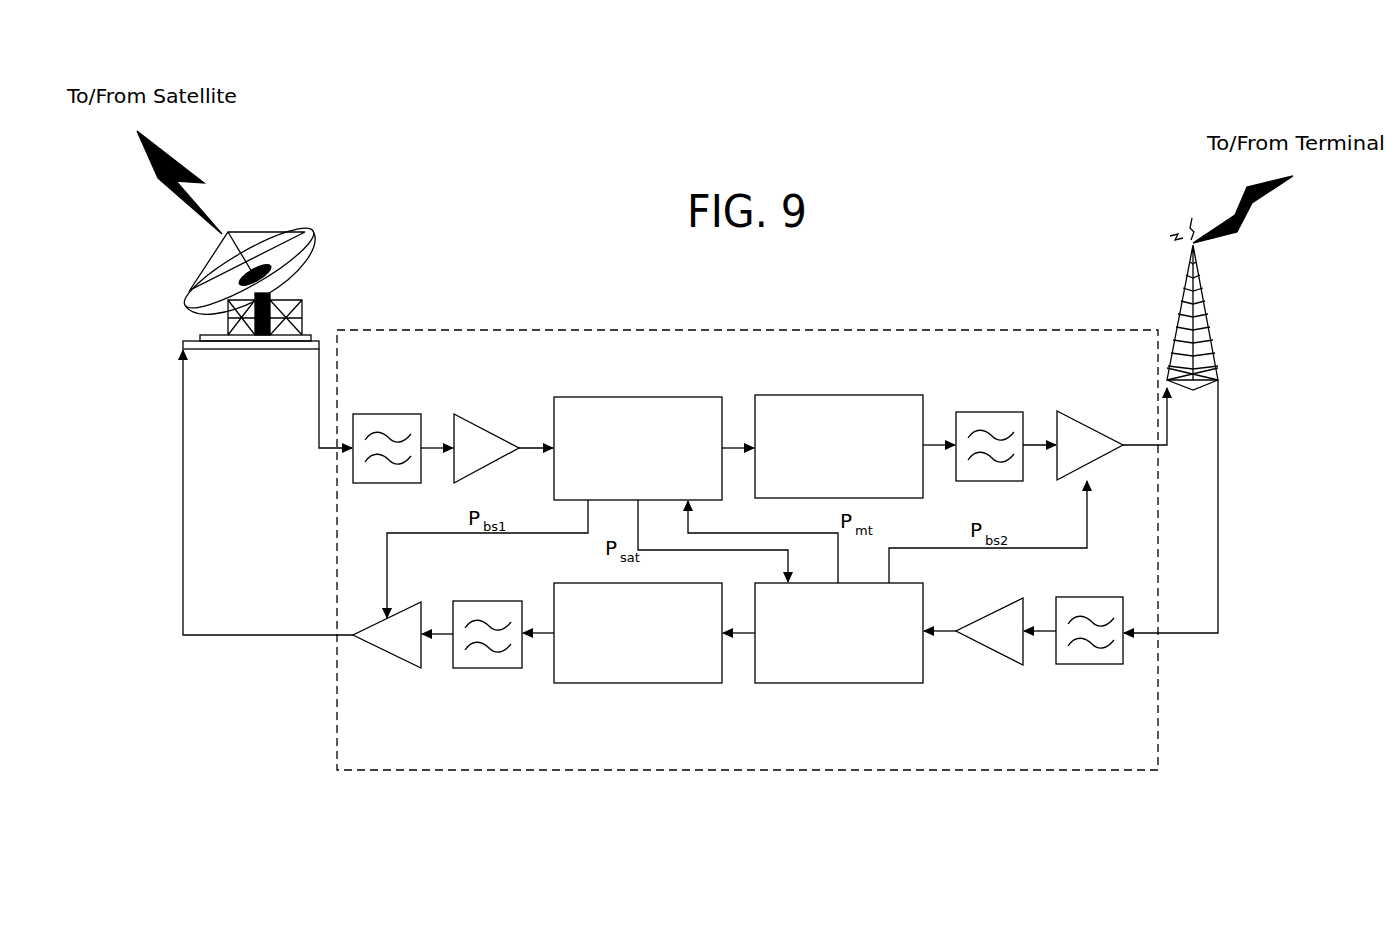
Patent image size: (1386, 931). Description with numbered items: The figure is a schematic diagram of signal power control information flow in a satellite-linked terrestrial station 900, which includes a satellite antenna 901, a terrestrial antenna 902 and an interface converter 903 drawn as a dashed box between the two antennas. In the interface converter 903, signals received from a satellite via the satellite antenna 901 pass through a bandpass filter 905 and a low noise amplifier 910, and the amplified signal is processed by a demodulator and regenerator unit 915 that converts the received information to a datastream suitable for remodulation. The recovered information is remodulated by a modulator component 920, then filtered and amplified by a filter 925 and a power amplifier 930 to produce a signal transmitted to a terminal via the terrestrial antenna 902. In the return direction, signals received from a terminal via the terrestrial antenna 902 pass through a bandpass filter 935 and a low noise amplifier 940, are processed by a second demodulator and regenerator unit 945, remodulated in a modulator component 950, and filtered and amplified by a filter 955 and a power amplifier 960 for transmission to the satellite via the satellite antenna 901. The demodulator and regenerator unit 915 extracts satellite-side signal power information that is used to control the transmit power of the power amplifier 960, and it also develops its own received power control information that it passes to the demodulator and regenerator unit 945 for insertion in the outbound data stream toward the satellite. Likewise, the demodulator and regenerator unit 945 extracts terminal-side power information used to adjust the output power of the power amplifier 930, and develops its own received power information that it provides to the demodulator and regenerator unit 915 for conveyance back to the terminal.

The satellite-linked terrestrial station 900 is at (1025, 127).
The satellite antenna 901 is at (303, 245).
The terrestrial antenna 902 is at (1210, 323).
The interface converter 903 is at (745, 328).
The bandpass filter 905 is at (388, 413).
The low noise amplifier 910 is at (487, 432).
The demodulator & regenerator unit 915 is at (640, 397).
The modulator component 920 is at (842, 395).
The filter 925 is at (990, 412).
The power amplifier 930 is at (1088, 422).
The bandpass filter 935 is at (1090, 597).
The low noise amplifier 940 is at (987, 613).
The demodulator & regenerator unit 945 is at (842, 683).
The modulator component 950 is at (640, 683).
The filter 955 is at (488, 668).
The power amplifier 960 is at (397, 658).